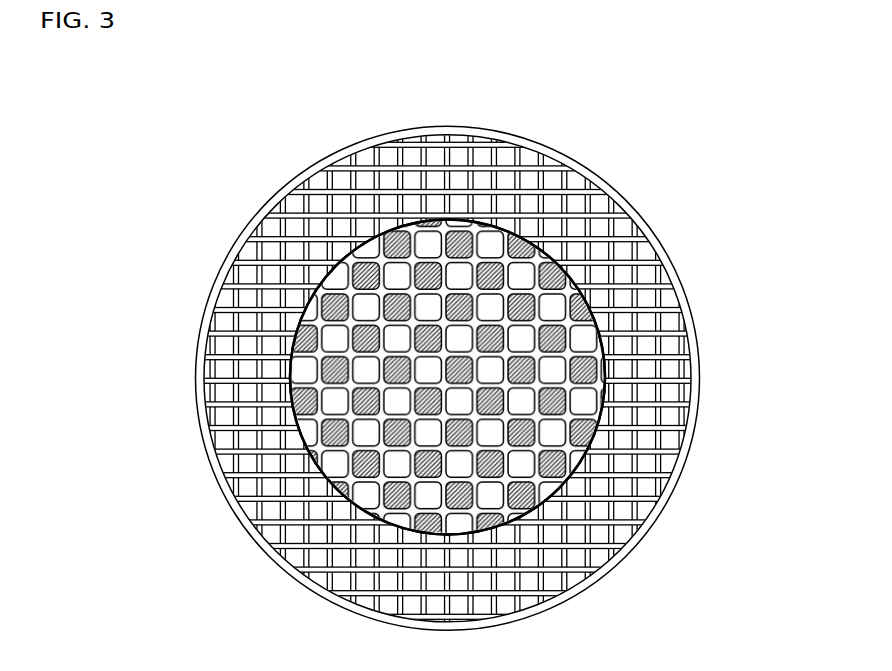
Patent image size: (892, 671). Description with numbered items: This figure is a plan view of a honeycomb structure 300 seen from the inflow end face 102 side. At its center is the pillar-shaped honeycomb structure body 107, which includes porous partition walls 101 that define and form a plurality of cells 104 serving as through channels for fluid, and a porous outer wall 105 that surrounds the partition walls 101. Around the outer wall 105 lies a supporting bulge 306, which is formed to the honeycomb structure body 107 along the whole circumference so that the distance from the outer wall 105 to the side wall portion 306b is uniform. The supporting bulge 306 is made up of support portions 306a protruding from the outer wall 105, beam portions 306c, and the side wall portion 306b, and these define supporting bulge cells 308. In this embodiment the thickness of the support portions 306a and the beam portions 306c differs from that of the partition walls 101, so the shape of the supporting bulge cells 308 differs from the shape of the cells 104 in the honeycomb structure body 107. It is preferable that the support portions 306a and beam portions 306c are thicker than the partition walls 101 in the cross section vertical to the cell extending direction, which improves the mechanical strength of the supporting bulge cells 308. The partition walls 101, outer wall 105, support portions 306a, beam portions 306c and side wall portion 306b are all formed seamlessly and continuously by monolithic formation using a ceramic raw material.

The honeycomb structure 300 is at (746, 83).
The partition walls 101 is at (482, 252).
The inflow end face 102 is at (351, 239).
The cells 104 is at (523, 262).
The outer wall 105 is at (583, 280).
The honeycomb structure body 107 is at (307, 290).
The supporting bulge 306 is at (197, 391).
The support portions 306a is at (637, 307).
The side wall portion 306b is at (697, 383).
The beam portions 306c is at (637, 370).
The supporting bulge cells 308 is at (270, 340).